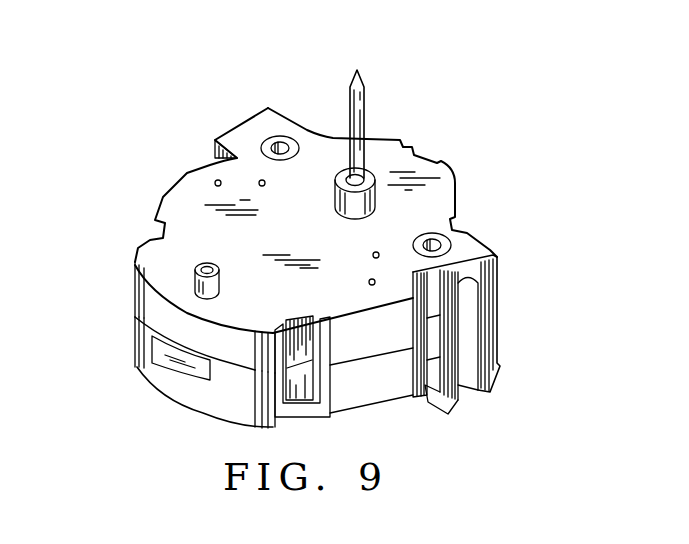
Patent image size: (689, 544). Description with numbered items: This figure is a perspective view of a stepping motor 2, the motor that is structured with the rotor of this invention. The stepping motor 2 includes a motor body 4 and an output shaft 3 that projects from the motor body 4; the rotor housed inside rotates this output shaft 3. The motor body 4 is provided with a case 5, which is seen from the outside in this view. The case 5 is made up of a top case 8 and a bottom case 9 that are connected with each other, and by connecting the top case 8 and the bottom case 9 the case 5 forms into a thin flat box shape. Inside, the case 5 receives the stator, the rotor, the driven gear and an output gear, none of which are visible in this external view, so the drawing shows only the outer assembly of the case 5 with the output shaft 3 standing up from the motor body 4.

The stepping motor 2 is at (390, 57).
The output shaft 3 is at (367, 112).
The motor body 4 is at (500, 303).
The case 5 is at (225, 345).
The top case 8 is at (133, 273).
The bottom case 9 is at (247, 372).